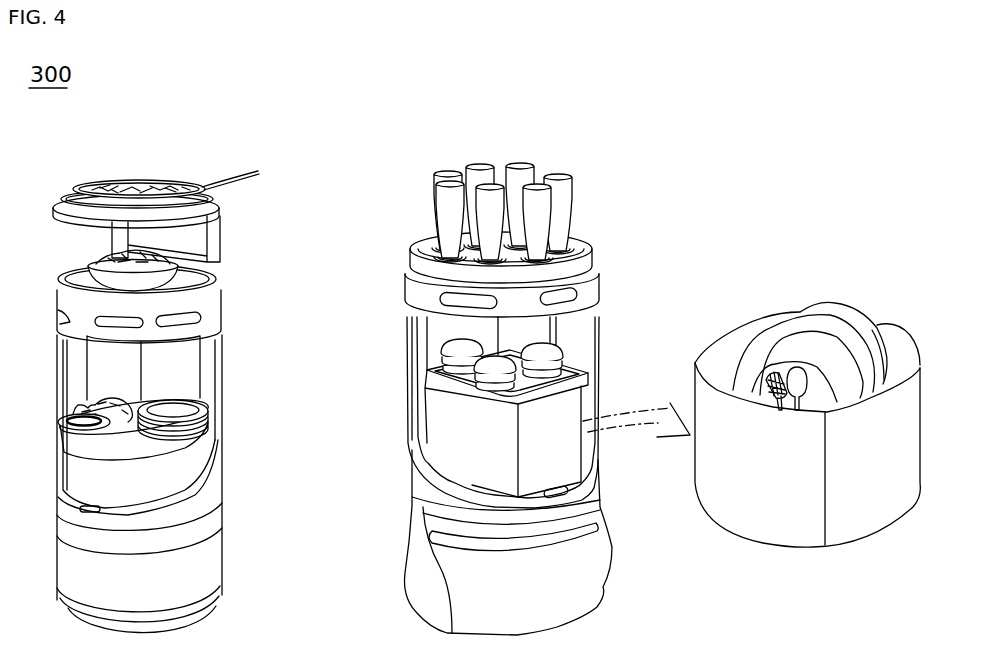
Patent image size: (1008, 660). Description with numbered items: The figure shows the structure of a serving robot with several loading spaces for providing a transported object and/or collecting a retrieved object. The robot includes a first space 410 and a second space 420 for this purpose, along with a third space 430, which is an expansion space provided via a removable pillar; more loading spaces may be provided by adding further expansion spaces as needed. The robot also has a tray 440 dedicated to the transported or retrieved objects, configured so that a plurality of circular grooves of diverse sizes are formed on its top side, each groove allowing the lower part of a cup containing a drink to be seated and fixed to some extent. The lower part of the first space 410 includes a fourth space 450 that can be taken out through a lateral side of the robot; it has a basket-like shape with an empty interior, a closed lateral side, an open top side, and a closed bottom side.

The first space 410 is at (200, 446).
The second space 420 is at (212, 310).
The third space 430 is at (215, 211).
The tray 440 is at (420, 257).
The fourth space 450 is at (448, 435).